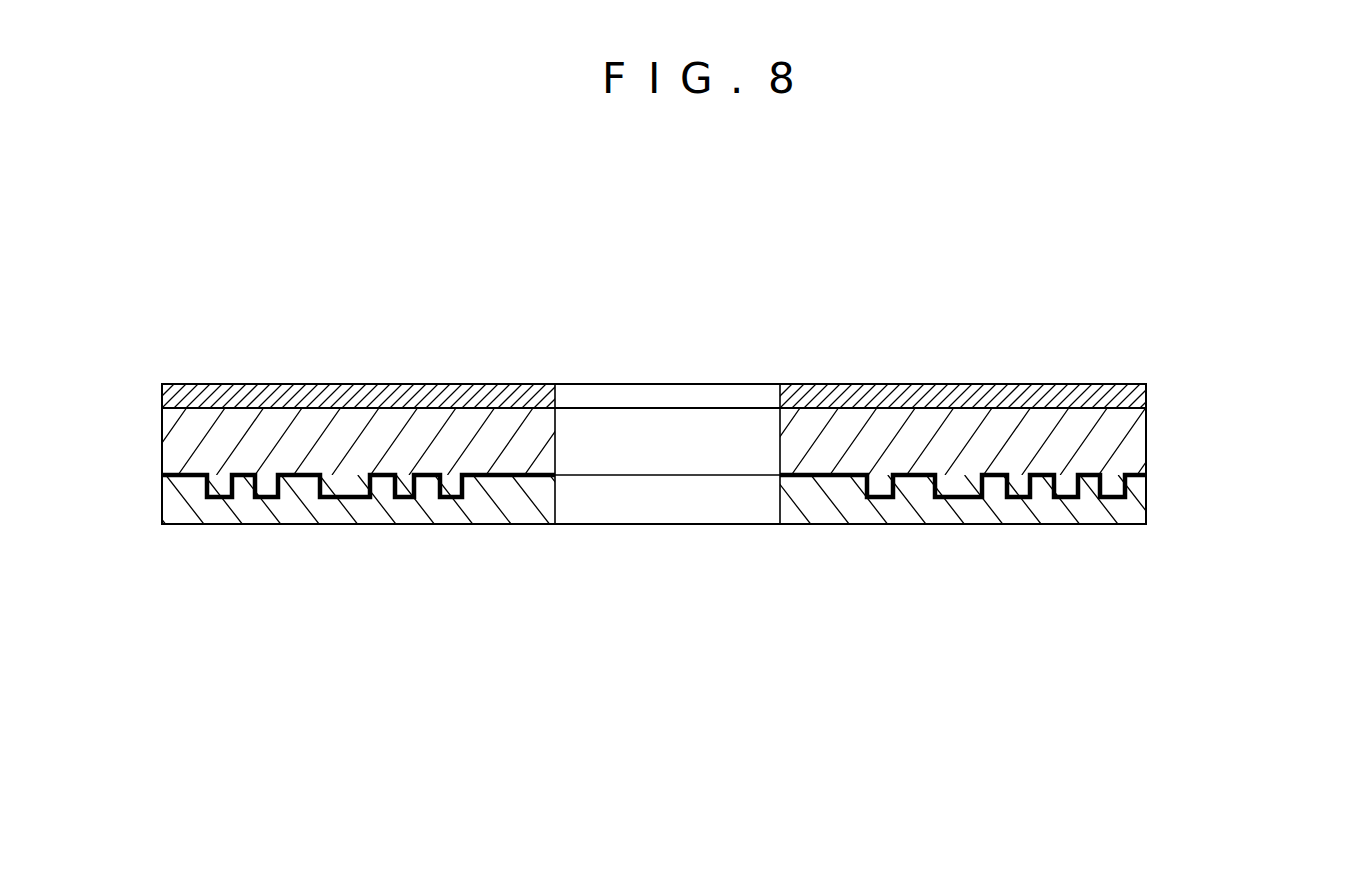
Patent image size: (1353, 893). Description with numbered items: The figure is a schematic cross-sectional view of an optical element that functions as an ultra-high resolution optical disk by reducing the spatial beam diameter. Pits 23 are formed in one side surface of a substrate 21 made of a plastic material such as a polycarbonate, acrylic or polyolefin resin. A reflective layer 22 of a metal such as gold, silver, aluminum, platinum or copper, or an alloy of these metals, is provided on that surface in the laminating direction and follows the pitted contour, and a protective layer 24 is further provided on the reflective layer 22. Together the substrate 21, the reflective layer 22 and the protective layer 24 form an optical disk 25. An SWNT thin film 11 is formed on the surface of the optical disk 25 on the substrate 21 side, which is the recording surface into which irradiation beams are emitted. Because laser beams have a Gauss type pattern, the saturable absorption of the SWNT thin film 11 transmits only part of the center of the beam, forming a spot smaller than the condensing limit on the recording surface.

The SWNT thin film 11 is at (160, 395).
The substrate 21 is at (1135, 436).
The reflective layer 22 is at (1138, 462).
The pits 23 is at (407, 472).
The protective layer 24 is at (1140, 500).
The optical disk 25 is at (720, 456).